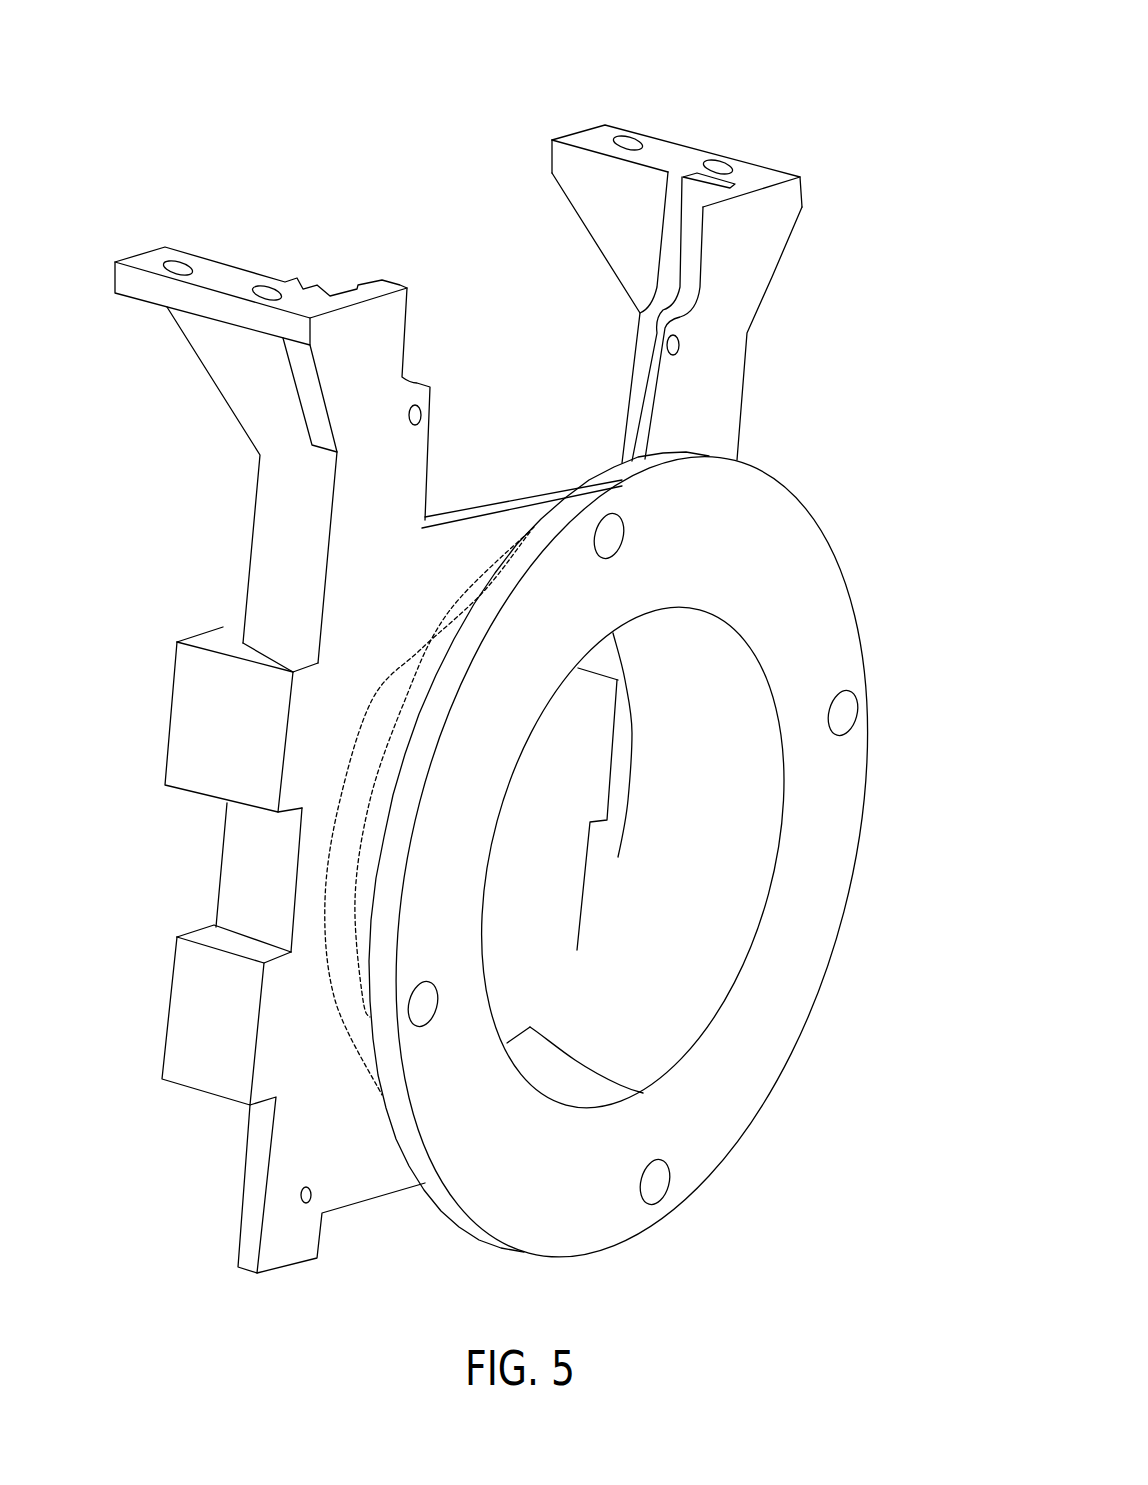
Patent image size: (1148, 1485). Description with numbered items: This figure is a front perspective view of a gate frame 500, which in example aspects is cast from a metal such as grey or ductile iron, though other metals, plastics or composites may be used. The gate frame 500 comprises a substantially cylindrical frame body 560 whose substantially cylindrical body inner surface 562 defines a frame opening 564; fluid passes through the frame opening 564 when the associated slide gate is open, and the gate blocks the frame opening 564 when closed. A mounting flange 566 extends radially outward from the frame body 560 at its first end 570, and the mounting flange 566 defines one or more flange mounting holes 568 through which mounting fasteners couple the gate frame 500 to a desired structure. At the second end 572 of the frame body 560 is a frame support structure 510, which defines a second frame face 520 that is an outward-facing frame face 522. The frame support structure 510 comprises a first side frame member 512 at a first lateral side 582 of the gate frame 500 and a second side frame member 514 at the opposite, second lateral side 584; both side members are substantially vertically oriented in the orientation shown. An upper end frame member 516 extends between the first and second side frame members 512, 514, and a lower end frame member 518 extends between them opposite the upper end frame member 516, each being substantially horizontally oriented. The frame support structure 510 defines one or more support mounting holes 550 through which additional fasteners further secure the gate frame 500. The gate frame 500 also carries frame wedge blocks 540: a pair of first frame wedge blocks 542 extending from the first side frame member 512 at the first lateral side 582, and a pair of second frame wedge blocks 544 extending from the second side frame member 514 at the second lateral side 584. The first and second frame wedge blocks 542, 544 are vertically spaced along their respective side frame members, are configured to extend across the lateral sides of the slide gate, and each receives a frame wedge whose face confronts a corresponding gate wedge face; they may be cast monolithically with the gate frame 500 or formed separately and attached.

The gate frame 500 is at (226, 96).
The frame support structure 510 is at (340, 615).
The first side frame member 512 is at (292, 515).
The second side frame member 514 is at (727, 363).
The upper end frame member 516 is at (504, 527).
The lower end frame member 518 is at (364, 1174).
The second frame face 520 is at (522, 486).
The outward-facing frame face 522 is at (433, 545).
The frame wedge blocks 540 is at (195, 866).
The first frame wedge blocks 542 is at (183, 720).
The second frame wedge blocks 544 is at (587, 857).
The support mounting holes 550 is at (267, 287).
The frame body 560 is at (707, 707).
The body inner surface 562 is at (729, 861).
The frame opening 564 is at (676, 988).
The mounting flange 566 is at (792, 1008).
The flange mounting holes 568 is at (410, 1005).
The first end 570 is at (736, 630).
The second end 572 is at (643, 1093).
The first lateral side 582 is at (292, 560).
The second lateral side 584 is at (745, 410).